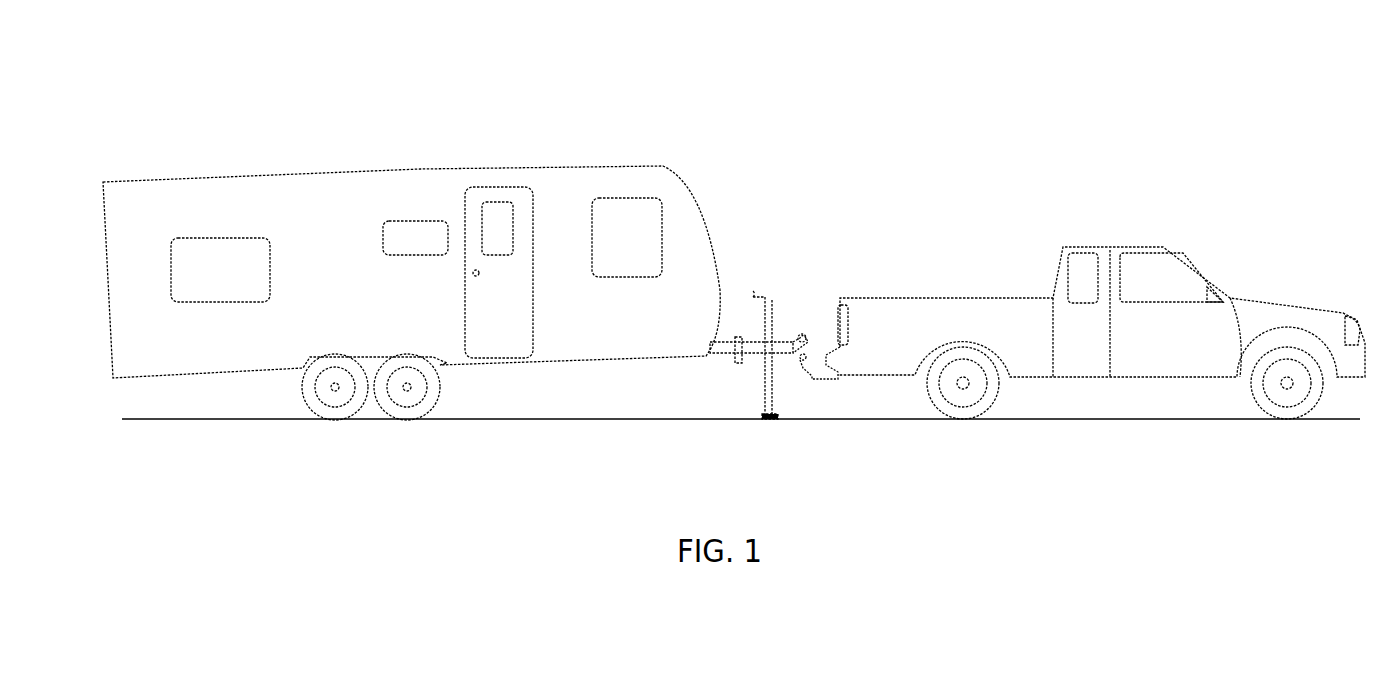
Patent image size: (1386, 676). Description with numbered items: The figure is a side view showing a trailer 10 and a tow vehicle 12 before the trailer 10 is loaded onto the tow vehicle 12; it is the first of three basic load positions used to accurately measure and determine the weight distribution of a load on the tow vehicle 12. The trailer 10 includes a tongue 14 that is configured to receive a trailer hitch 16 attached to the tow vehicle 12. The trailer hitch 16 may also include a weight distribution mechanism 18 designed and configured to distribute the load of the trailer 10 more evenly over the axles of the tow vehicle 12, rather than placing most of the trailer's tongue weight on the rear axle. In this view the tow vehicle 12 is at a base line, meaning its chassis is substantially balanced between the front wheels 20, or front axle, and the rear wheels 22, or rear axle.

The trailer 10 is at (503, 155).
The tow vehicle 12 is at (1018, 278).
The tongue 14 is at (804, 330).
The trailer hitch 16 is at (806, 363).
The weight distribution mechanism 18 is at (747, 377).
The front wheels 20 is at (1287, 395).
The rear wheels 22 is at (965, 395).